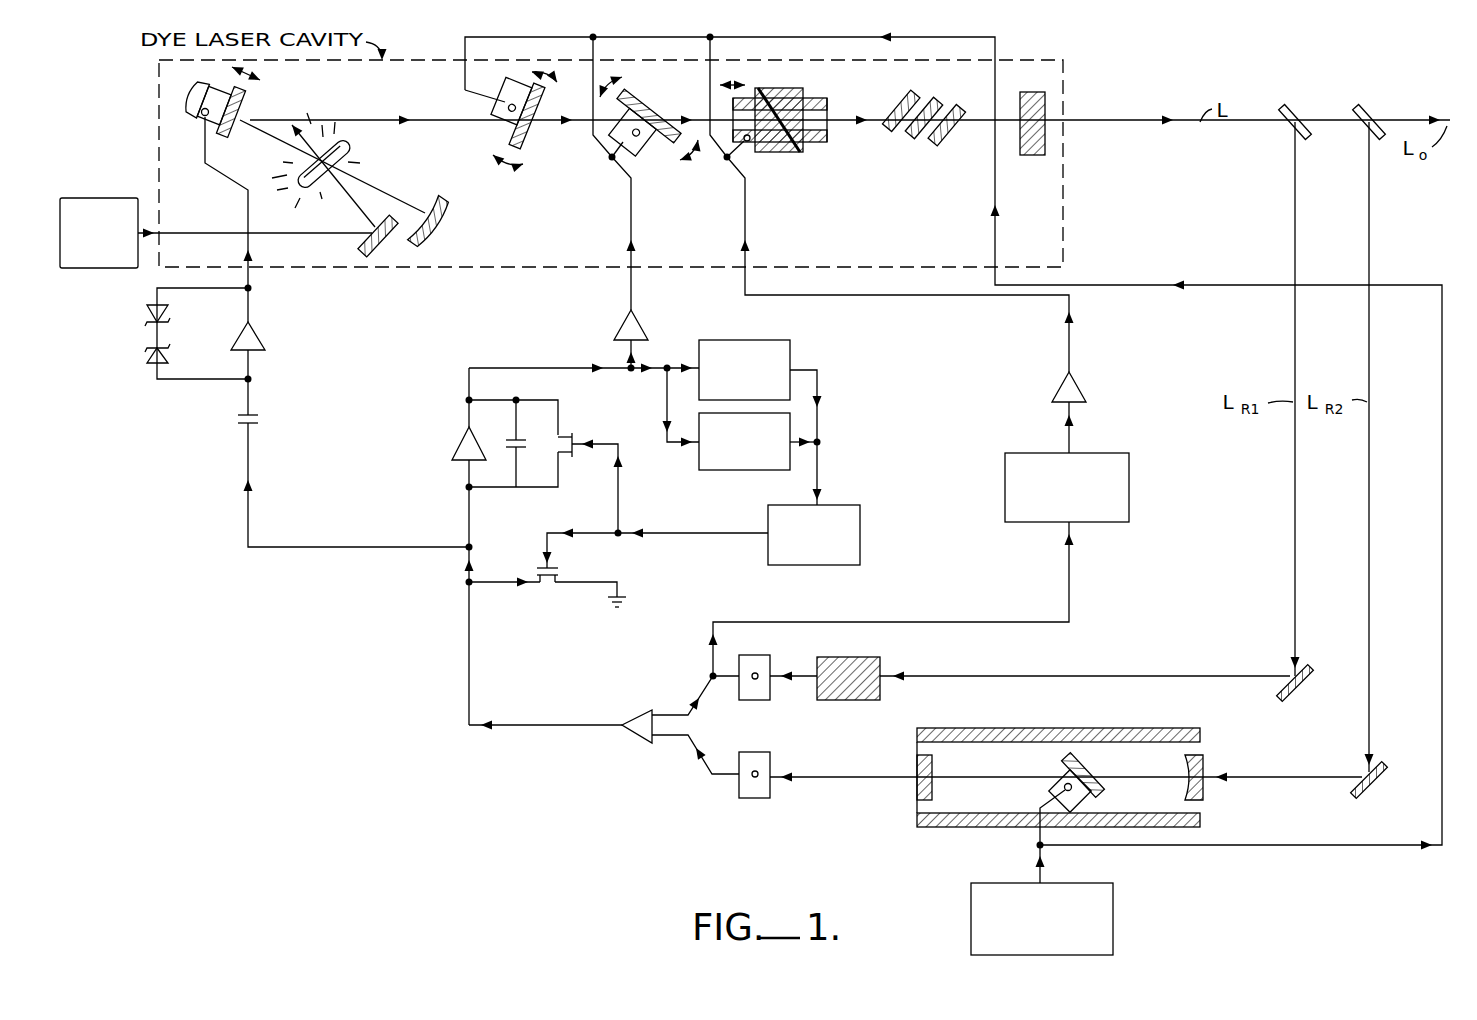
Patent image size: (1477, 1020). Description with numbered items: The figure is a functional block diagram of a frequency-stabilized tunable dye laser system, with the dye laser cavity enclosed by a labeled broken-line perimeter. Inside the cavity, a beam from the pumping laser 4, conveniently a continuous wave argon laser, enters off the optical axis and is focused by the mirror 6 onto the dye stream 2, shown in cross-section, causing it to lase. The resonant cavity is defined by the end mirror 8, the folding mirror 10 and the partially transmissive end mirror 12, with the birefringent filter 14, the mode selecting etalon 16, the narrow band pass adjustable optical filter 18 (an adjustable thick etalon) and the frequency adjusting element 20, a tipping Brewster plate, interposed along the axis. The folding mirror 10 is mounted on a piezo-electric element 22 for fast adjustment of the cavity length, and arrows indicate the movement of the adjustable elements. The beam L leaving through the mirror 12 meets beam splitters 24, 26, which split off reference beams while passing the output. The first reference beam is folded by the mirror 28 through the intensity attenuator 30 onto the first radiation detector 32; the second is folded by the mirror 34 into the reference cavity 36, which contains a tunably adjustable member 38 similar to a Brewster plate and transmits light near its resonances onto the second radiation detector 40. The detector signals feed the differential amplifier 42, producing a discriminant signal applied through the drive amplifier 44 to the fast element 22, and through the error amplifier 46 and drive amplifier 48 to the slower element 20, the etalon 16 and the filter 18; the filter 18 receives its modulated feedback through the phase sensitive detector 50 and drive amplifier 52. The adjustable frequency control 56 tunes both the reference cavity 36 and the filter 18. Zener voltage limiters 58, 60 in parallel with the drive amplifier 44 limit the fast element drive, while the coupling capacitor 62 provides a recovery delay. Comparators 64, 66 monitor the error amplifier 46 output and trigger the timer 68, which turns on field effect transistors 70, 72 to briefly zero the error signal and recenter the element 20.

The dye stream 2 is at (350, 144).
The pumping laser 4 is at (92, 198).
The mirror 6 is at (390, 246).
The end mirror 8 is at (447, 214).
The folding mirror 10 is at (252, 98).
The partially transmissive end mirror 12 is at (1032, 156).
The birefringent filter 14 is at (906, 150).
The etalon 16 is at (531, 137).
The narrow band pass selectively adjustable optical filter 18 is at (779, 154).
The frequency adjusting element 20 is at (665, 143).
The piezo-electric element 22 is at (203, 117).
The beam splitter 24 is at (1305, 108).
The beam splitter 26 is at (1379, 108).
The mirror 28 is at (1308, 688).
The intensity attenuator 30 is at (877, 657).
The first radiation detector 32 is at (752, 655).
The mirror 34 is at (1376, 791).
The reference cavity 36 is at (1018, 725).
The tunably adjustable member 38 is at (1090, 754).
The second radiation detector 40 is at (757, 752).
The differential amplifier 42 is at (638, 740).
The drive amplifier 44 is at (266, 338).
The error amplifier 46 is at (451, 446).
The drive amplifier 48 is at (612, 320).
The phase sensitive detector 50 is at (1130, 462).
The drive amplifier 52 is at (1086, 392).
The adjustable frequency control 56 is at (1113, 906).
The zener voltage limiter 58 is at (146, 318).
The zener voltage limiter 60 is at (146, 352).
The coupling capacitor 62 is at (238, 424).
The operational amplifier comparator 64 is at (792, 345).
The operational amplifier comparator 66 is at (728, 471).
The timer 68 is at (861, 510).
The field effect transistor 70 is at (560, 574).
The field effect transistor 72 is at (572, 433).